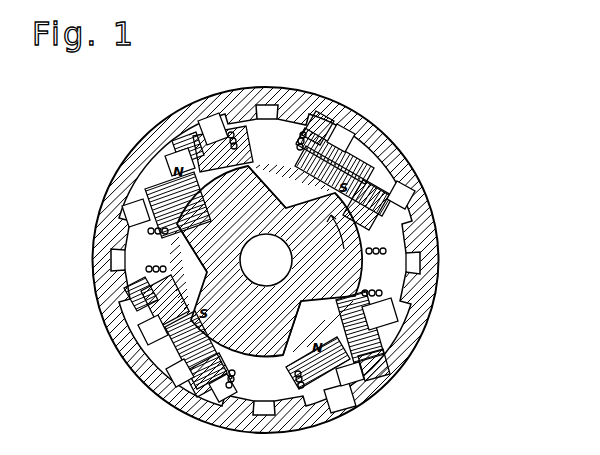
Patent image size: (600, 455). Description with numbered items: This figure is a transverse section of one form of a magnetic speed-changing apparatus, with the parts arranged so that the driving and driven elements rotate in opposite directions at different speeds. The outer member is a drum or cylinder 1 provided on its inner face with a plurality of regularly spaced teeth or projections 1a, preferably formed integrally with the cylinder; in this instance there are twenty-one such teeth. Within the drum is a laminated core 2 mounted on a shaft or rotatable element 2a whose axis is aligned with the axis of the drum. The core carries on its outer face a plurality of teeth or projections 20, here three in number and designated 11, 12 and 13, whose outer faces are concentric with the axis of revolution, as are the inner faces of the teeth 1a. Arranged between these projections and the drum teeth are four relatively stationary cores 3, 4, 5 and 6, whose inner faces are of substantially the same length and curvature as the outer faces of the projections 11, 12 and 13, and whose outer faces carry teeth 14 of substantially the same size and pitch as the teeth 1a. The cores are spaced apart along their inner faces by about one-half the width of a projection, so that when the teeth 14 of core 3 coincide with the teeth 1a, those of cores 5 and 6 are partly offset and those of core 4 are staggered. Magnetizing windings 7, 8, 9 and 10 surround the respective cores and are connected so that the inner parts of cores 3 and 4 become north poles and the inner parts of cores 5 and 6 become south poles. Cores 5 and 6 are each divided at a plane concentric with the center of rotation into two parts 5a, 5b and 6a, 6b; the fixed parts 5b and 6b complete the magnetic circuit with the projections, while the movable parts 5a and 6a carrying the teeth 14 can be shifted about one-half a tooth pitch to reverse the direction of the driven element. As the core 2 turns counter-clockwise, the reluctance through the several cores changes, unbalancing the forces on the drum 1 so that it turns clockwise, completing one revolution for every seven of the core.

The drum or cylinder 1 is at (105, 182).
The teeth or projections 1a is at (345, 140).
The core 2 is at (165, 130).
The shaft or rotatable element 2a is at (266, 260).
The stationary core 3 is at (210, 120).
The stationary core 4 is at (345, 378).
The stationary core 5 is at (400, 175).
The movable core part 5a is at (326, 112).
The fixed core part 5b is at (405, 222).
The stationary core 6 is at (125, 297).
The movable core part 6a is at (143, 330).
The fixed core part 6b is at (175, 372).
The magnetizing winding 7 is at (115, 230).
The magnetizing winding 8 is at (378, 300).
The magnetizing winding 9 is at (290, 125).
The magnetizing winding 10 is at (218, 392).
The tooth or projection 11 is at (342, 262).
The tooth or projection 12 is at (247, 165).
The tooth or projection 13 is at (200, 307).
The teeth or projections 14 is at (157, 157).
The teeth or projections 20 is at (286, 315).